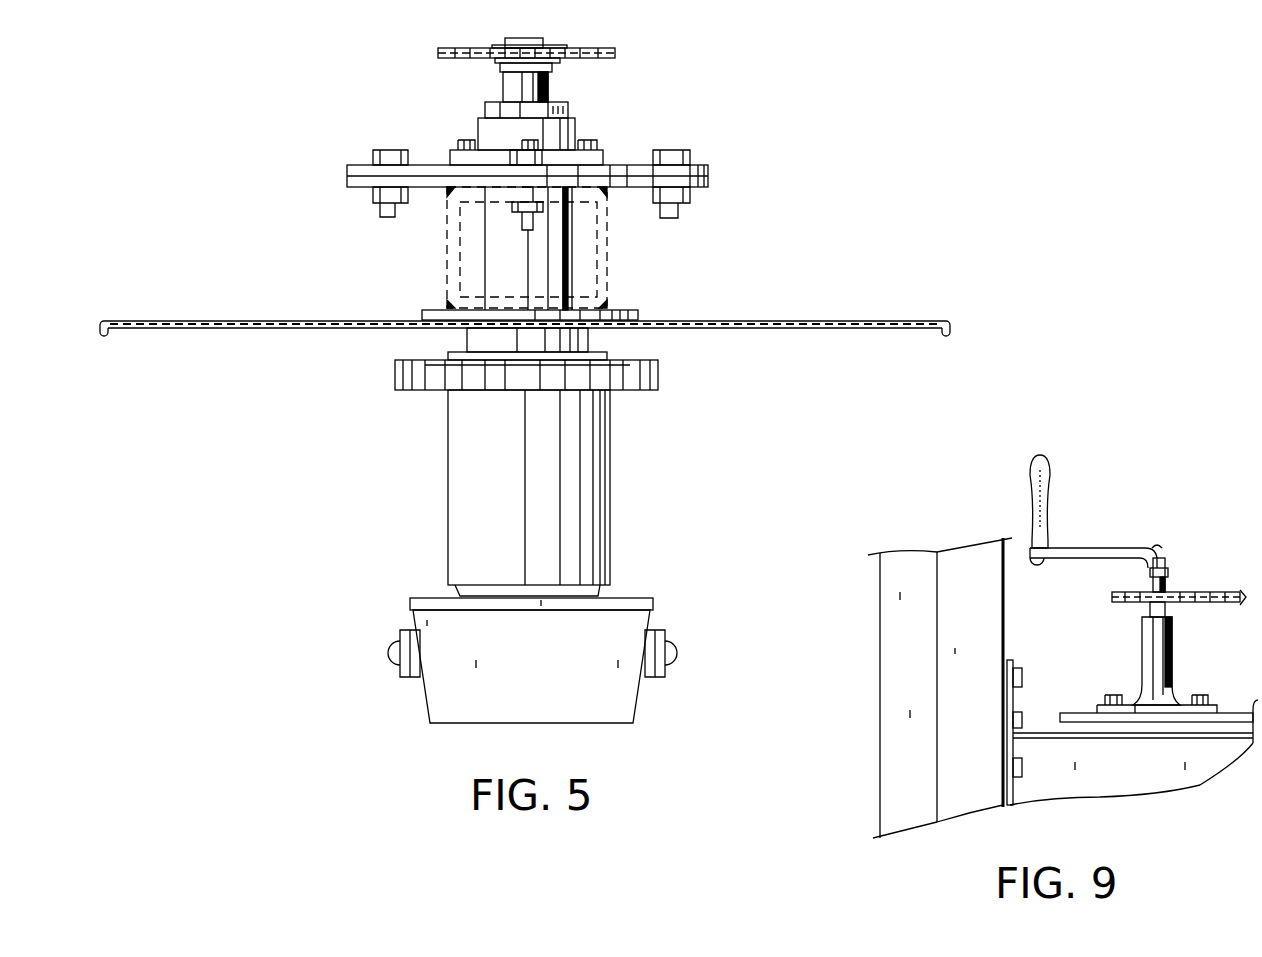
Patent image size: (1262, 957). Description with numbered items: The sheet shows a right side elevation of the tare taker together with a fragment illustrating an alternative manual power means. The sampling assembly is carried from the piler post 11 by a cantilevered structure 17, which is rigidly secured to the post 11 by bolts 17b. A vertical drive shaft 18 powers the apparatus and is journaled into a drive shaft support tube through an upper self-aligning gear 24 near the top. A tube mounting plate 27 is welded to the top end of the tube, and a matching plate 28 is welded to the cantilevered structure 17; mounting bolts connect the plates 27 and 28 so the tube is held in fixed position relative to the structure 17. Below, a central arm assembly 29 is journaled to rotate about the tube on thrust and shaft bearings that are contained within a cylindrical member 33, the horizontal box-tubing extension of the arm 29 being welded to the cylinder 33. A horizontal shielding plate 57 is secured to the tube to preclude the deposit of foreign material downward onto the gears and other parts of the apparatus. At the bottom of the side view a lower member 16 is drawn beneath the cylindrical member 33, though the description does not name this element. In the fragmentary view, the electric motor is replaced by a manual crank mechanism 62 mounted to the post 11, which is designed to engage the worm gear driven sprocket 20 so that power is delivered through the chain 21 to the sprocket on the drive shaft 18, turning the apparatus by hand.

In FIG. 5, the vertical drive shaft 18 is at (537, 91).
In FIG. 5, the upper self-aligning gear 24 is at (553, 135).
In FIG. 5, the tube mounting plate 27 is at (710, 170).
In FIG. 5, the matching plate 28 is at (710, 185).
In FIG. 5, the cantilevered structure 17 is at (447, 258).
In FIG. 5, the horizontal shielding plate 57 is at (815, 320).
In FIG. 5, the cylindrical member 33 is at (572, 445).
In FIG. 5, the central arm assembly 29 is at (610, 512).
In FIG. 5, the base bracket 16 is at (438, 697).
In FIG. 9, the post 11 is at (968, 568).
In FIG. 9, the bolts 17b is at (1022, 680).
In FIG. 9, the worm gear driven sprocket 20 is at (1175, 590).
In FIG. 9, the chain 21 is at (1215, 595).
In FIG. 9, the manual crank mechanism 62 is at (1097, 548).